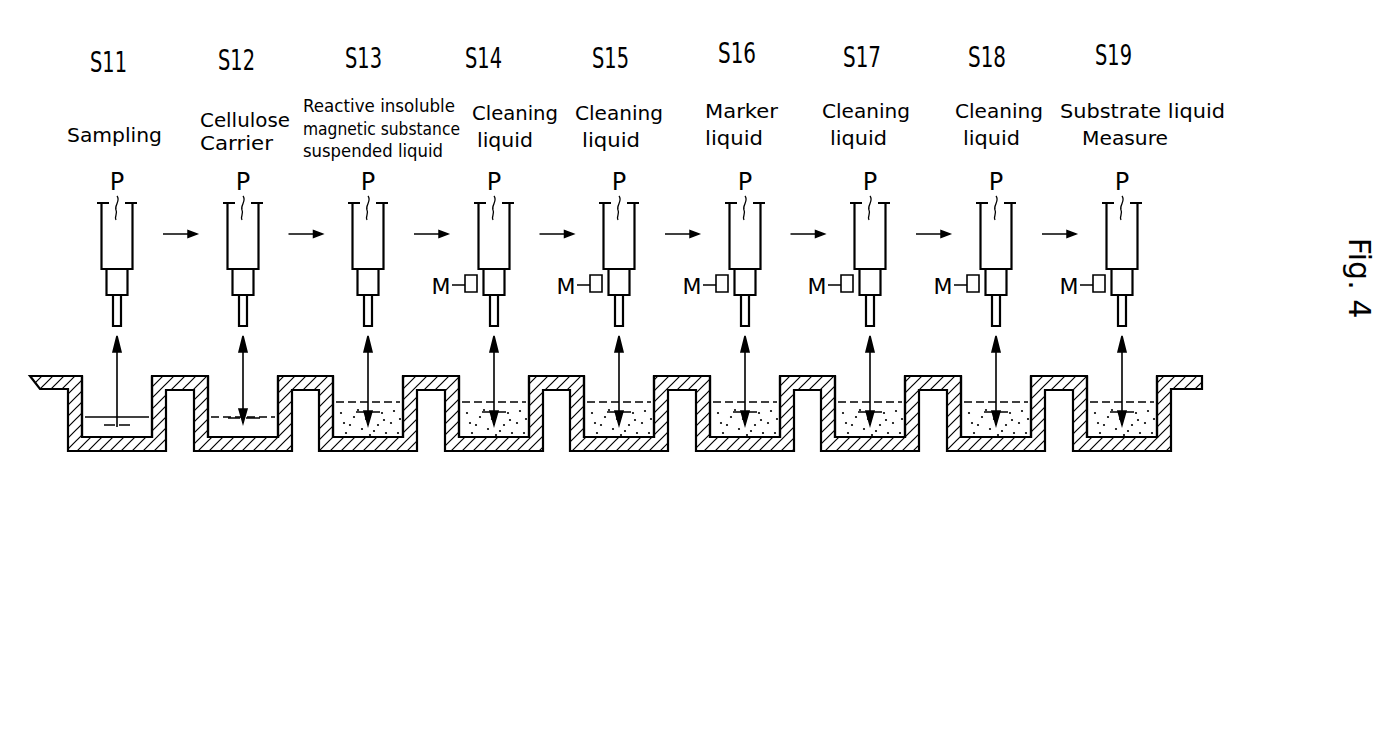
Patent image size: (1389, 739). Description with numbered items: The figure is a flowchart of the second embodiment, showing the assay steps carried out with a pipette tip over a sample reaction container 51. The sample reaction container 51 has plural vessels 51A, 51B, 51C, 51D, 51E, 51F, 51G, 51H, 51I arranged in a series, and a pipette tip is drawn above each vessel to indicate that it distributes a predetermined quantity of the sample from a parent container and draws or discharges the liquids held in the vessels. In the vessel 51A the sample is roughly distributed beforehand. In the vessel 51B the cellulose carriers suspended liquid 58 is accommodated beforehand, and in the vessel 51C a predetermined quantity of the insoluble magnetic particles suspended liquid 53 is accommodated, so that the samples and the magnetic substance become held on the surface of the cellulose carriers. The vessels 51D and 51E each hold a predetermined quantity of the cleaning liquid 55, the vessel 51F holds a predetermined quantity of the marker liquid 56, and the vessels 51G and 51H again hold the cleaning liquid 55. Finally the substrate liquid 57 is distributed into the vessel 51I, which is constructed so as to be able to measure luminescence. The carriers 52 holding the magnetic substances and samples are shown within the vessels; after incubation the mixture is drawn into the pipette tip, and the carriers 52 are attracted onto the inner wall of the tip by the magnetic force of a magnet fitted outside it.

The sample reaction container 51 is at (1182, 377).
The vessel 51A is at (90, 398).
The vessel 51B is at (216, 398).
The vessel 51C is at (341, 398).
The vessel 51D is at (467, 398).
The vessel 51E is at (593, 398).
The vessel 51F is at (719, 398).
The vessel 51G is at (844, 398).
The vessel 51H is at (970, 398).
The vessel 51I is at (1096, 398).
The carriers 52 is at (387, 436).
The insoluble magnetic particles suspended liquid 53 is at (388, 405).
The cleaning liquid 55 is at (508, 405).
The marker liquid 56 is at (762, 407).
The substrate liquid 57 is at (1138, 405).
The cellulose carriers suspended liquid 58 is at (270, 418).